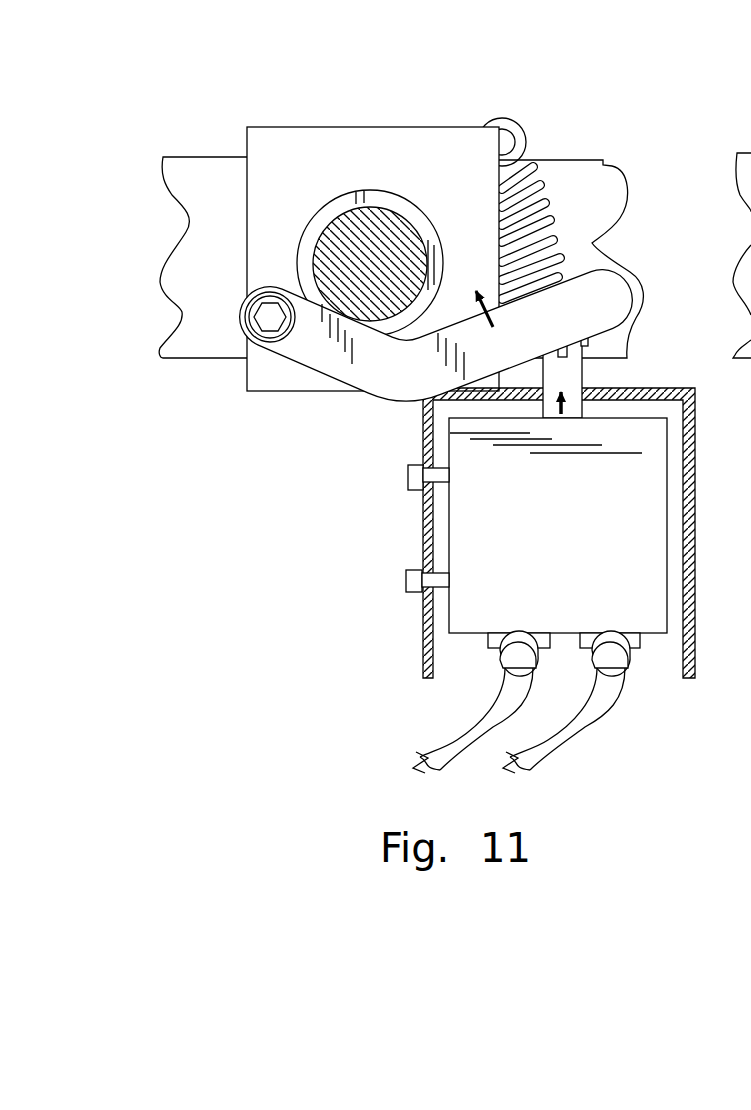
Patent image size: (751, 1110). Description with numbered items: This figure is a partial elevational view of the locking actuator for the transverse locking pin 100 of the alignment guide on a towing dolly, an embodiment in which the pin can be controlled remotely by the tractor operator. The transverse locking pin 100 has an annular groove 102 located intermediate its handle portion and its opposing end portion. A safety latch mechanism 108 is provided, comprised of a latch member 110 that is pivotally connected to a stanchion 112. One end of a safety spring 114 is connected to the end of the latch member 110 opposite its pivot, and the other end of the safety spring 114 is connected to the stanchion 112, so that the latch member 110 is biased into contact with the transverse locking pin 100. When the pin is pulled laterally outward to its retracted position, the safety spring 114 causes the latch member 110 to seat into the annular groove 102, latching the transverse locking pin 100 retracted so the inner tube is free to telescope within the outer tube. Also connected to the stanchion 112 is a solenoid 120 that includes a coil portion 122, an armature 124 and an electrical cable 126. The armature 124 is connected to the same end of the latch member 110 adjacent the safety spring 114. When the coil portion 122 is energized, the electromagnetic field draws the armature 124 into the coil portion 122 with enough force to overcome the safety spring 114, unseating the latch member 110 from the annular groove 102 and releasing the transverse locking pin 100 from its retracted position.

The transverse locking pin 100 is at (338, 192).
The annular groove 102 is at (393, 204).
The safety latch mechanism 108 is at (288, 410).
The latch member 110 is at (398, 389).
The stanchion 112 is at (268, 370).
The safety spring 114 is at (558, 247).
The solenoid 120 is at (695, 500).
The coil portion 122 is at (645, 520).
The armature 124 is at (567, 370).
The electrical cable 126 is at (515, 703).